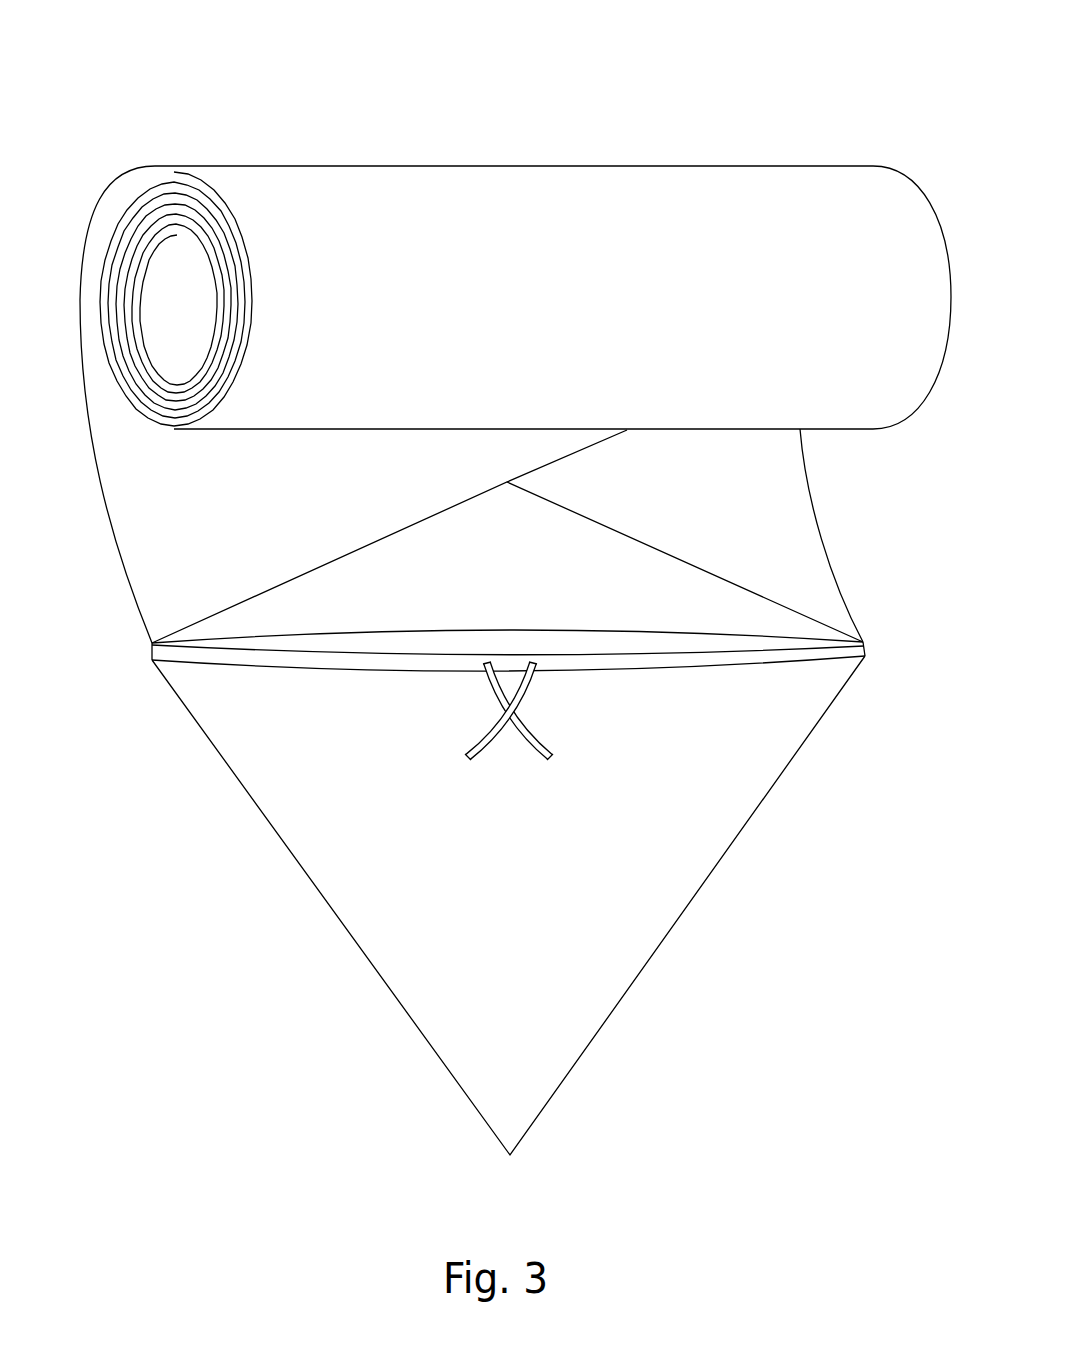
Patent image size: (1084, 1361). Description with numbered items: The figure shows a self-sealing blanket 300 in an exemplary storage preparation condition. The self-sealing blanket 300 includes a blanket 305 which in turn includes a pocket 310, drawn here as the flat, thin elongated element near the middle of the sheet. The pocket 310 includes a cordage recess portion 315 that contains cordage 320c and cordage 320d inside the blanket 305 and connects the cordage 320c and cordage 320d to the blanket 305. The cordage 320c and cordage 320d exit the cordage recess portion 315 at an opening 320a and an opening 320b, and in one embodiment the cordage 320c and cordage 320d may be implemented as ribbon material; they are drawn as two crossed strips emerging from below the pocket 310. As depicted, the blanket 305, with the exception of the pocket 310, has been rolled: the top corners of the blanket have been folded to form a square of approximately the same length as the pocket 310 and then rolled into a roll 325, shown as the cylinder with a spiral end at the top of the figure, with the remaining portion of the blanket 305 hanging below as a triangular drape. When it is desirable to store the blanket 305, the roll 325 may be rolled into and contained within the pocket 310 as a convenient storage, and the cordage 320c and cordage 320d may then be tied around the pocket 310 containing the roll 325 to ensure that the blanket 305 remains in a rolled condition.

The self-sealing blanket 300 is at (845, 41).
The blanket 305 is at (303, 872).
The pocket 310 is at (180, 640).
The cordage recess portion 315 is at (210, 660).
The opening 320a is at (483, 664).
The opening 320b is at (537, 664).
The cordage 320c is at (463, 758).
The cordage 320d is at (553, 758).
The roll 325 is at (153, 166).